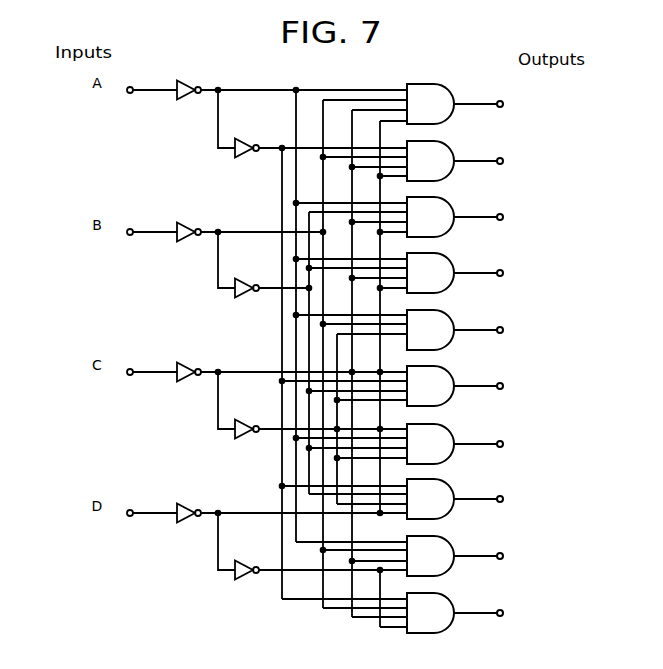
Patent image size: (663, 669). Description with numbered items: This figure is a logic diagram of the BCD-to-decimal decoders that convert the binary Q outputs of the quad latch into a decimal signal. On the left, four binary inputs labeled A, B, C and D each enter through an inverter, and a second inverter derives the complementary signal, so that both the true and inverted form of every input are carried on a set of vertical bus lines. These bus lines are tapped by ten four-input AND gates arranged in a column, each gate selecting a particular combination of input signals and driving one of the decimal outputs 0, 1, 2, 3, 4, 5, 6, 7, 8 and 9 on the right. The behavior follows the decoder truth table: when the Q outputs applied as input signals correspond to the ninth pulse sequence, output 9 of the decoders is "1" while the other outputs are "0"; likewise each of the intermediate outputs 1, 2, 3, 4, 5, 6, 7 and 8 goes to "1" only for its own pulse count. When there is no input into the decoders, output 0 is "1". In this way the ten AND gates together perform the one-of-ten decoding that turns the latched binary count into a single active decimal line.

The output 0 is at (467, 104).
The output 1 is at (467, 161).
The output 2 is at (467, 217).
The output 3 is at (467, 273).
The output 4 is at (467, 330).
The output 5 is at (467, 386).
The output 6 is at (467, 444).
The output 7 is at (467, 499).
The output 8 is at (467, 556).
The output 9 is at (467, 613).